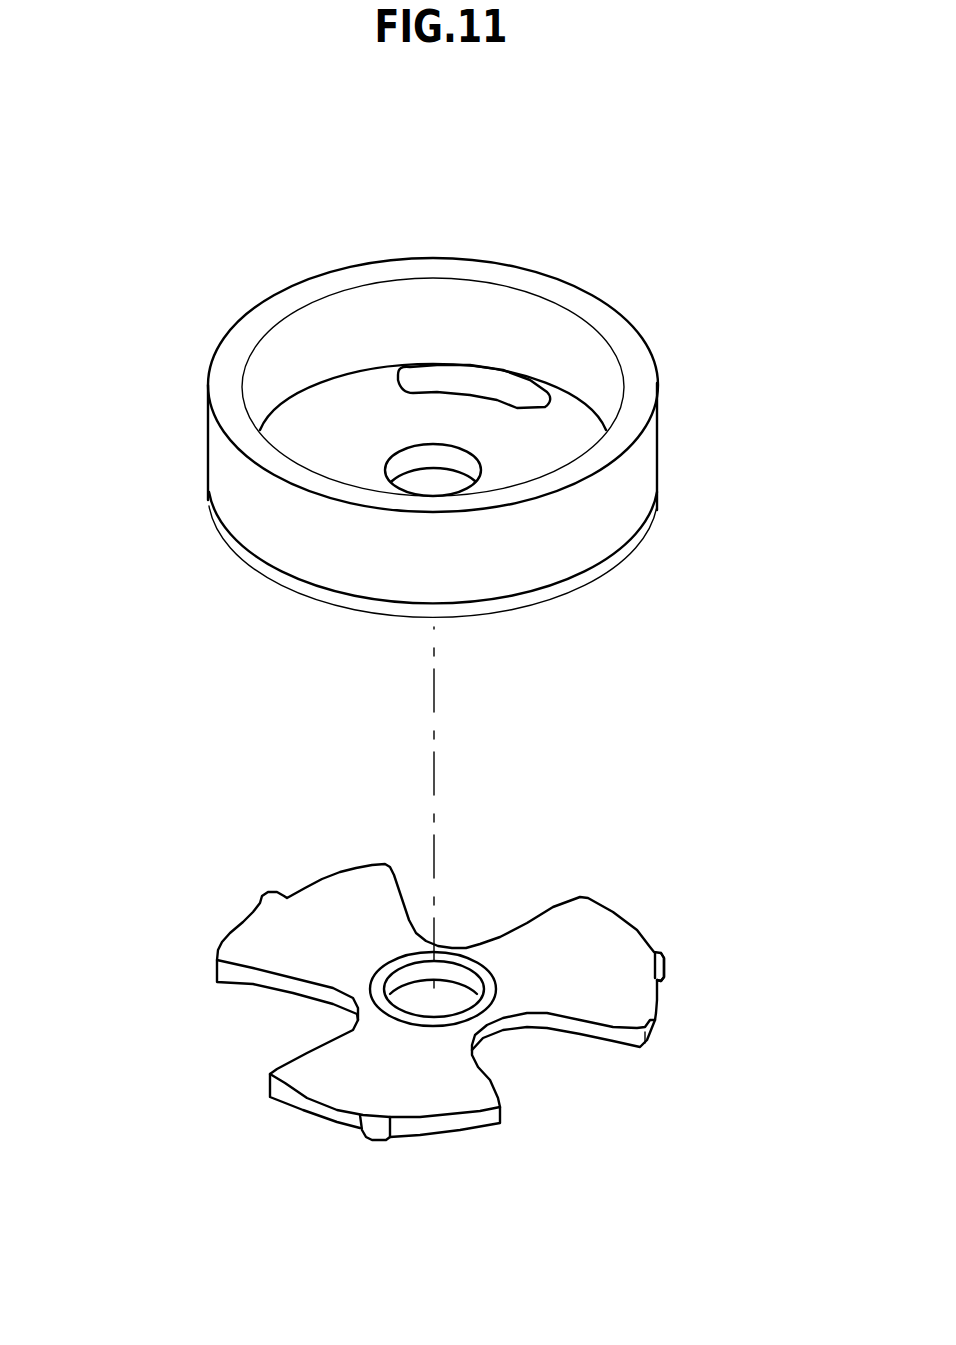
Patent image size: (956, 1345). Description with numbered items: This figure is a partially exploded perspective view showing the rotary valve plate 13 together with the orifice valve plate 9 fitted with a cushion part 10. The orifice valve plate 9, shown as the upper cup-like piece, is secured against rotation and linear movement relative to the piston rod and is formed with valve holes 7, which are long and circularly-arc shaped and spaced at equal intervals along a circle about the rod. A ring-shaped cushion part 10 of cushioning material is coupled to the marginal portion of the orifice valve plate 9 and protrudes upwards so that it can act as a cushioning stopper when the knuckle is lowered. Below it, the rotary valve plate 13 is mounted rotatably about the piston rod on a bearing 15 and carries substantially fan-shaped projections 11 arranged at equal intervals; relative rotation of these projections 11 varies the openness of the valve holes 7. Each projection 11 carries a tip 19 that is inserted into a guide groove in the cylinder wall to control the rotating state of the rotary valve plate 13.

The valve hole 7 is at (497, 385).
The orifice valve plate 9 is at (332, 408).
The cushion part 10 is at (612, 327).
The projection 11 is at (320, 1070).
The rotary valve plate 13 is at (620, 875).
The bearing 15 is at (482, 973).
The tip 19 is at (373, 1117).